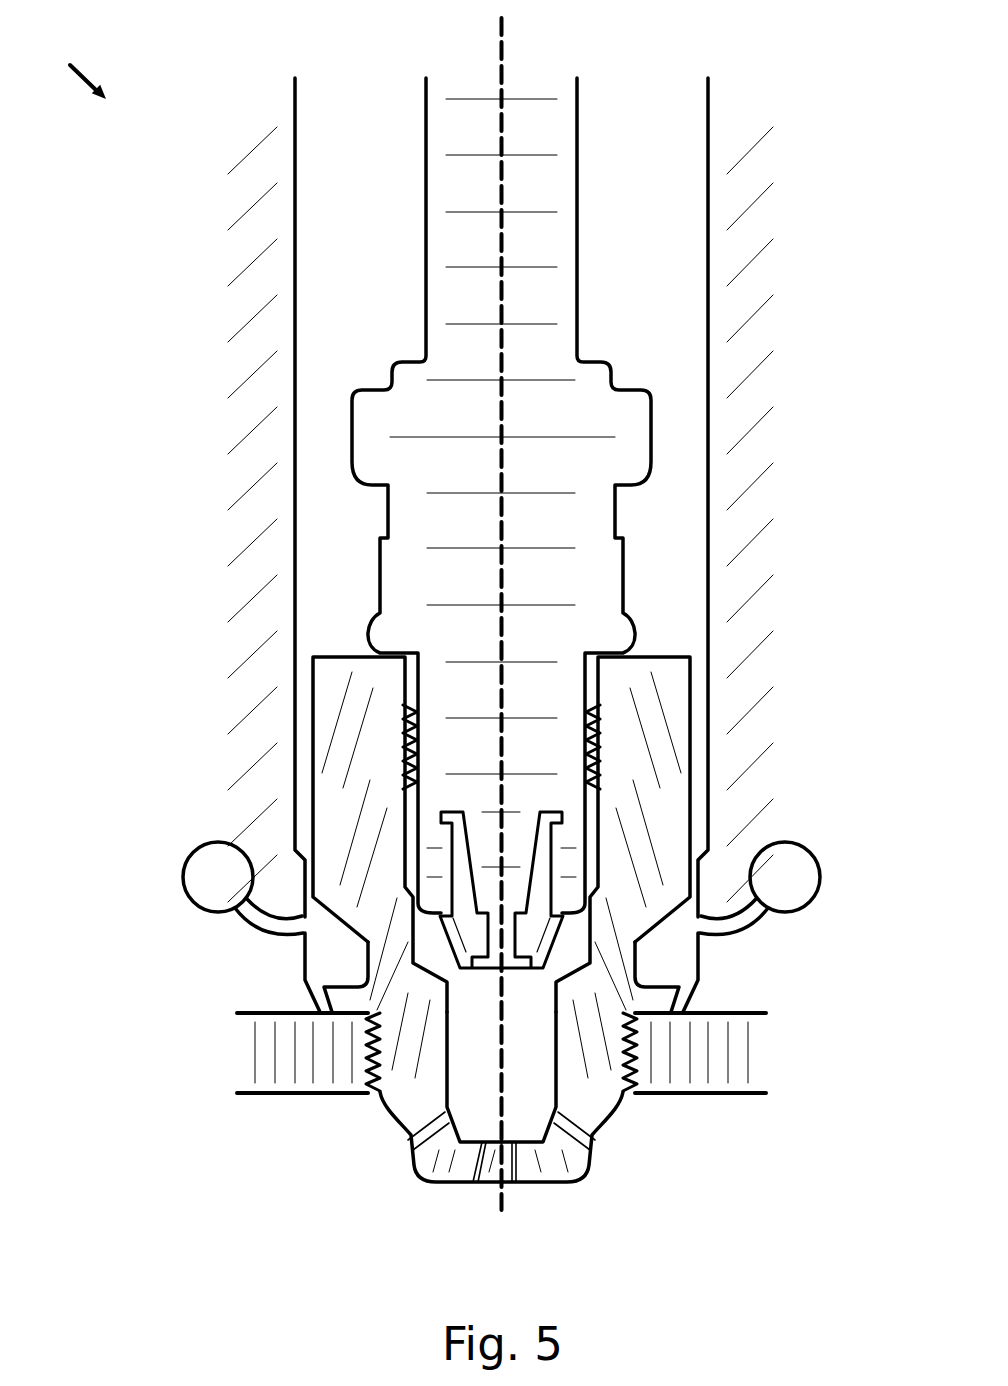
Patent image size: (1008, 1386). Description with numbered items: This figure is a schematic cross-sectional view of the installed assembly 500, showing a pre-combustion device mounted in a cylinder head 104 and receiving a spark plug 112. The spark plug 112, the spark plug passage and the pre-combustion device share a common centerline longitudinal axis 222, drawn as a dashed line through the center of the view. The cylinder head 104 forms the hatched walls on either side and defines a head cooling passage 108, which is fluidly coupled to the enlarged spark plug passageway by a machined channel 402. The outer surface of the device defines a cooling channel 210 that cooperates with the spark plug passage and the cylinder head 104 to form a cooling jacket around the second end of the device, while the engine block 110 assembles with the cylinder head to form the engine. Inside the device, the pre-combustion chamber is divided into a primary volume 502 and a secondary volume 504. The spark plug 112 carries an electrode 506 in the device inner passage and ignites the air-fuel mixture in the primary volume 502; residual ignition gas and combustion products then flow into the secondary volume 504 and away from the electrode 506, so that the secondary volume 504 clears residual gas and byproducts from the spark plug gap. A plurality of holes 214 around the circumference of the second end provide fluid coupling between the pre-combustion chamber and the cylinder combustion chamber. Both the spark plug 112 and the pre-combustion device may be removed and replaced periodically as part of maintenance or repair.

The fuel injector assembly 500 is at (71, 68).
The centerline longitudinal axis 222 is at (505, 47).
The spark plug 112 is at (563, 221).
The cylinder head 104 is at (755, 279).
The head cooling passage 108 is at (197, 862).
The machined channel 402 is at (740, 918).
The cooling channel 210 is at (327, 957).
The secondary volume 504 is at (680, 957).
The primary volume 502 is at (543, 1077).
The holes 214 is at (413, 1133).
The engine block 110 is at (737, 1082).
The electrode 506 is at (509, 975).